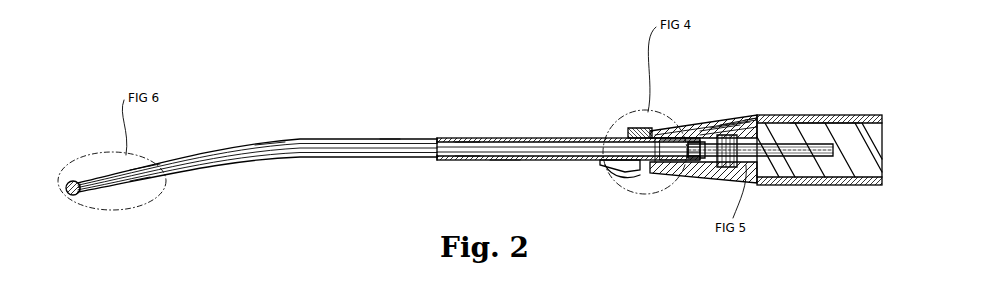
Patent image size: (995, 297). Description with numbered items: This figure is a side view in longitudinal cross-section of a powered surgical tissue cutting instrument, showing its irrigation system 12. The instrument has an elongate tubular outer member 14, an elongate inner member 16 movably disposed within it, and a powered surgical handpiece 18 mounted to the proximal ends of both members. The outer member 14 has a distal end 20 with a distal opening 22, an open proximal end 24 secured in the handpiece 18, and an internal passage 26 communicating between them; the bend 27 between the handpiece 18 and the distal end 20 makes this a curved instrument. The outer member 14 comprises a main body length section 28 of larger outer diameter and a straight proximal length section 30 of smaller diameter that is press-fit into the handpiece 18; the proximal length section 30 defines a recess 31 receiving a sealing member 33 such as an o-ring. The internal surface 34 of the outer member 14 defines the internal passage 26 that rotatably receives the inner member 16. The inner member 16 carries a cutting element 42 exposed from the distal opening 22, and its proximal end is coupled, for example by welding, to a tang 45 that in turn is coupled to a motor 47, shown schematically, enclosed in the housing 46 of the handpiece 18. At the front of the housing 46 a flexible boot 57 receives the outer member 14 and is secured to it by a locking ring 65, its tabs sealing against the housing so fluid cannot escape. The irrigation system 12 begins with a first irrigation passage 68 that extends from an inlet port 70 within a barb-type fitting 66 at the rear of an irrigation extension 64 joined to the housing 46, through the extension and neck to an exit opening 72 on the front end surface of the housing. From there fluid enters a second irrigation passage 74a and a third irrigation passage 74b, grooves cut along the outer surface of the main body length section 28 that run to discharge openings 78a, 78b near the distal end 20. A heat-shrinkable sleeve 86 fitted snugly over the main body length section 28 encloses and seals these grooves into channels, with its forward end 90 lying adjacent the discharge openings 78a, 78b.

The irrigation system 12 is at (727, 108).
The elongate tubular outer member 14 is at (490, 137).
The elongate inner member 16 is at (393, 142).
The powered surgical handpiece 18 is at (797, 114).
The distal end 20 is at (100, 170).
The distal opening 22 is at (86, 194).
The open proximal end 24 is at (668, 137).
The internal passage 26 is at (438, 138).
The bend 27 is at (270, 142).
The main body length section 28 is at (525, 145).
The proximal length section 30 is at (658, 138).
The recess 31 is at (674, 164).
The sealing member 33 is at (662, 162).
The internal surface 34 is at (438, 160).
The cutting element 42 is at (70, 195).
The tang 45 is at (790, 157).
The housing 46 is at (690, 176).
The motor 47 is at (824, 124).
The boot 57 is at (626, 178).
The irrigation extension 64 is at (722, 112).
The locking ring 65 is at (610, 169).
The fitting 66 is at (746, 112).
The first irrigation passage 68 is at (692, 128).
The inlet port 70 is at (758, 117).
The exit opening 72 is at (640, 128).
The second irrigation passage 74a is at (464, 134).
The third irrigation passage 74b is at (465, 162).
The discharge opening 78a is at (138, 164).
The discharge opening 78b is at (138, 188).
The sleeve 86 is at (500, 160).
The forward end 90 is at (152, 196).